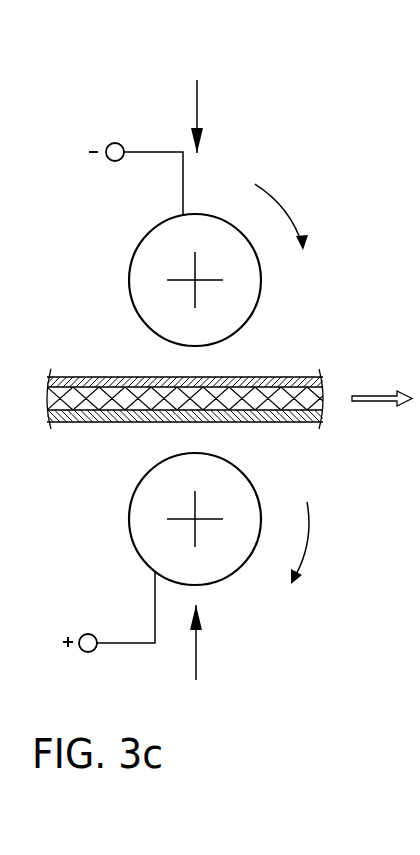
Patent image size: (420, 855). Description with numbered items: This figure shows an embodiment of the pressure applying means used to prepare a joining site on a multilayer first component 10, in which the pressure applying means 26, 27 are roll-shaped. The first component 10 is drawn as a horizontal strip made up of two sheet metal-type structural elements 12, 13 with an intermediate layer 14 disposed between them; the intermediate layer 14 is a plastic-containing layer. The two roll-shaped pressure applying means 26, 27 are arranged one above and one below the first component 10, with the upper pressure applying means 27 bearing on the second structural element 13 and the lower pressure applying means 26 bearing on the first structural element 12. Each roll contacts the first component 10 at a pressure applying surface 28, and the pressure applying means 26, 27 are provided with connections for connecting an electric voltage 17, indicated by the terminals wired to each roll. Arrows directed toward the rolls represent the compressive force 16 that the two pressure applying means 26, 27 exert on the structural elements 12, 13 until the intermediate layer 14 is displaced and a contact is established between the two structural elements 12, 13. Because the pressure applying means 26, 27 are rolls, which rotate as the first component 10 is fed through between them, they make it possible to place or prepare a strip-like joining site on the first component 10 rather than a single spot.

The first component 10 is at (90, 430).
The first structural element 12 is at (300, 415).
The second structural element 13 is at (257, 382).
The intermediate layer 14 is at (292, 393).
The compressive force 16 is at (197, 112).
The electric voltage connection 17 is at (115, 142).
The pressure applying means 26 is at (133, 539).
The pressure applying means 27 is at (133, 257).
The pressure applying surface 28 is at (184, 354).